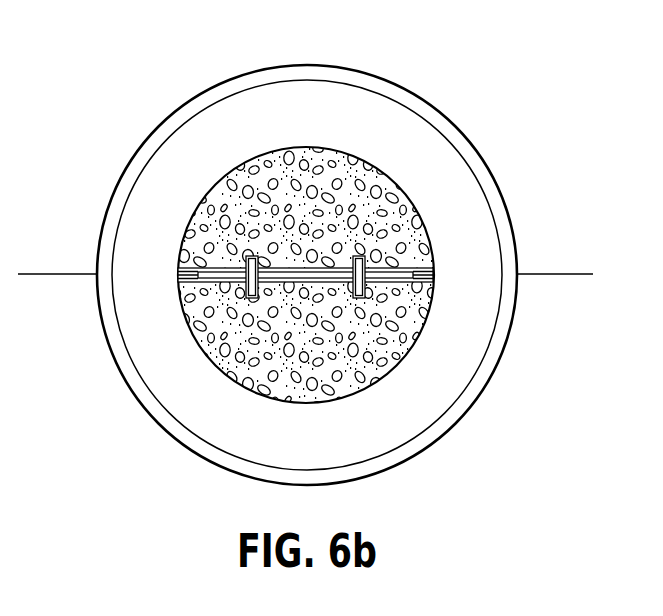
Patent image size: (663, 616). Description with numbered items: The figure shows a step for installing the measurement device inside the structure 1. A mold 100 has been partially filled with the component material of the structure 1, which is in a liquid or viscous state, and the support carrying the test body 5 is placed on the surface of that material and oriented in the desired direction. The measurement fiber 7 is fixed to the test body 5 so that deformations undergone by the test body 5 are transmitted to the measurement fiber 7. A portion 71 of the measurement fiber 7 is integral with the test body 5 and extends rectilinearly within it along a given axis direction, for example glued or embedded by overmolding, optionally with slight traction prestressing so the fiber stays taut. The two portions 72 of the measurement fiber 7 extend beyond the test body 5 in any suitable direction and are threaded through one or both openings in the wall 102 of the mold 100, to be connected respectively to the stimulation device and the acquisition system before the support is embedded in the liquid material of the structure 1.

The structure 1 is at (345, 190).
The mold 100 is at (443, 115).
The wall 102 is at (510, 285).
The measurement fiber 7 is at (563, 274).
The portions of the measurement fiber 72 is at (430, 265).
The portion of the measurement fiber 71 is at (280, 283).
The test body 5 is at (333, 283).